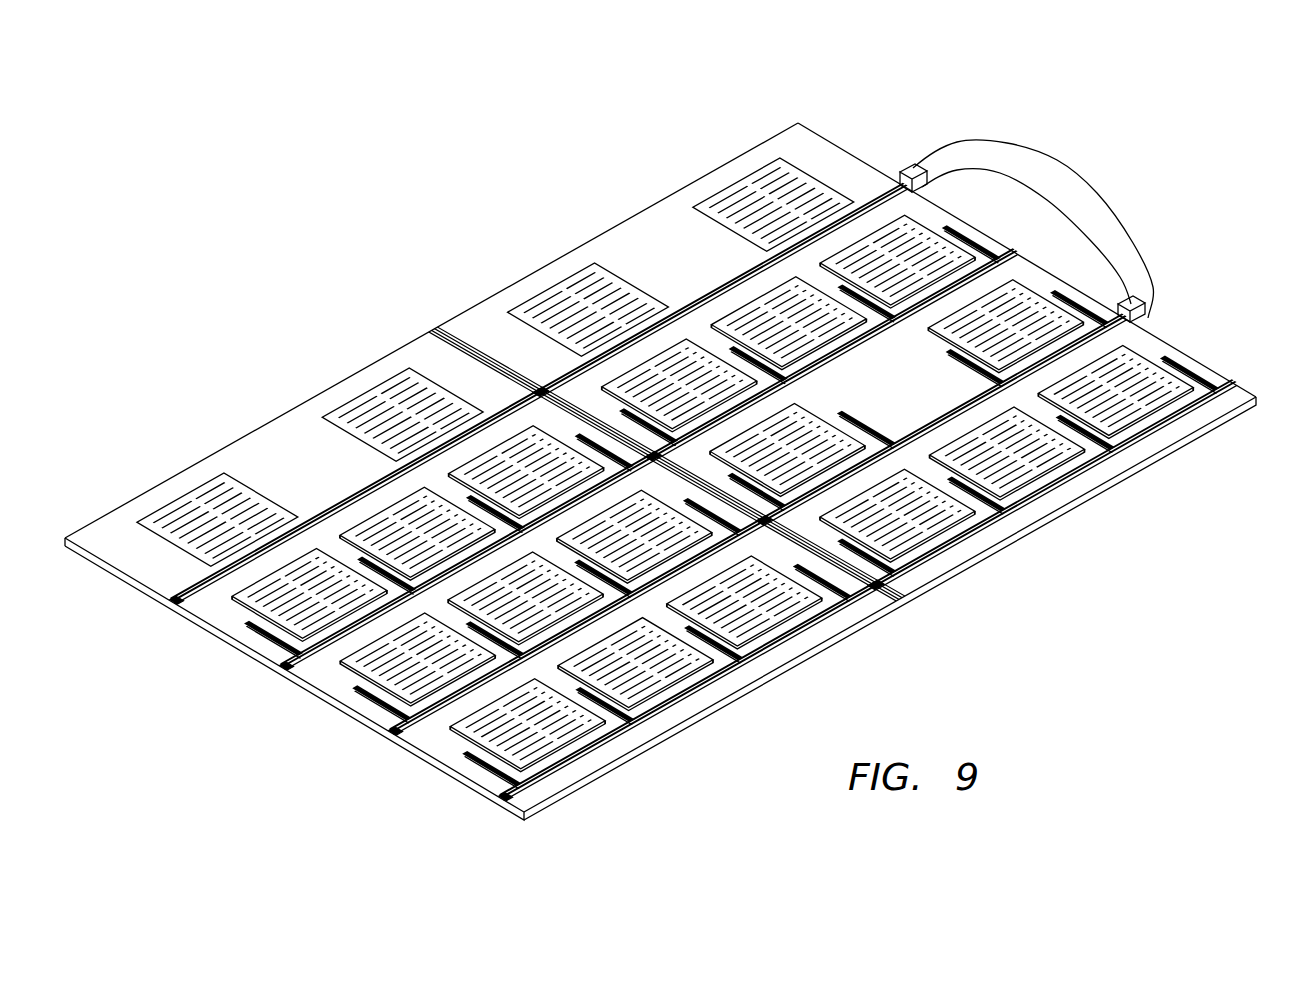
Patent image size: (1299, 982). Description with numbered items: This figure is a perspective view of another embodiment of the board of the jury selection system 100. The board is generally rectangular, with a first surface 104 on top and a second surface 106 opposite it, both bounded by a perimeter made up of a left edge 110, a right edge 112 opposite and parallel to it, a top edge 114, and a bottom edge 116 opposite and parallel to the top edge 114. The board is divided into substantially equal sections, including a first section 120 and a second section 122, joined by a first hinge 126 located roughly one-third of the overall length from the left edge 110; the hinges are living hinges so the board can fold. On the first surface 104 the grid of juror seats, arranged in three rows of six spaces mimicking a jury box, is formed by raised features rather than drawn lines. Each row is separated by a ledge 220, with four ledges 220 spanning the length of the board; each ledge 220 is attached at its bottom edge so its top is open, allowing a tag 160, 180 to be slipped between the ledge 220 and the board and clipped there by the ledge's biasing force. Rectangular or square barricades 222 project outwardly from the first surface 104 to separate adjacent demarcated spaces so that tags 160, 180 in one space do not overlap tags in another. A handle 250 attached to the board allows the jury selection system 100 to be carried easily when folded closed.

The jury selection system 100 is at (826, 92).
The first surface 104 is at (1249, 390).
The second surface 106 is at (1217, 426).
The left edge 110 is at (450, 771).
The right edge 112 is at (1158, 332).
The top edge 114 is at (500, 290).
The bottom edge 116 is at (1103, 493).
The first section 120 is at (80, 533).
The second section 122 is at (852, 175).
The first hinge 126 is at (438, 332).
The tag 160 is at (148, 520).
The tag 180 is at (705, 210).
The ledge 220 is at (177, 602).
The barricades 222 is at (265, 635).
The handle 250 is at (1053, 170).